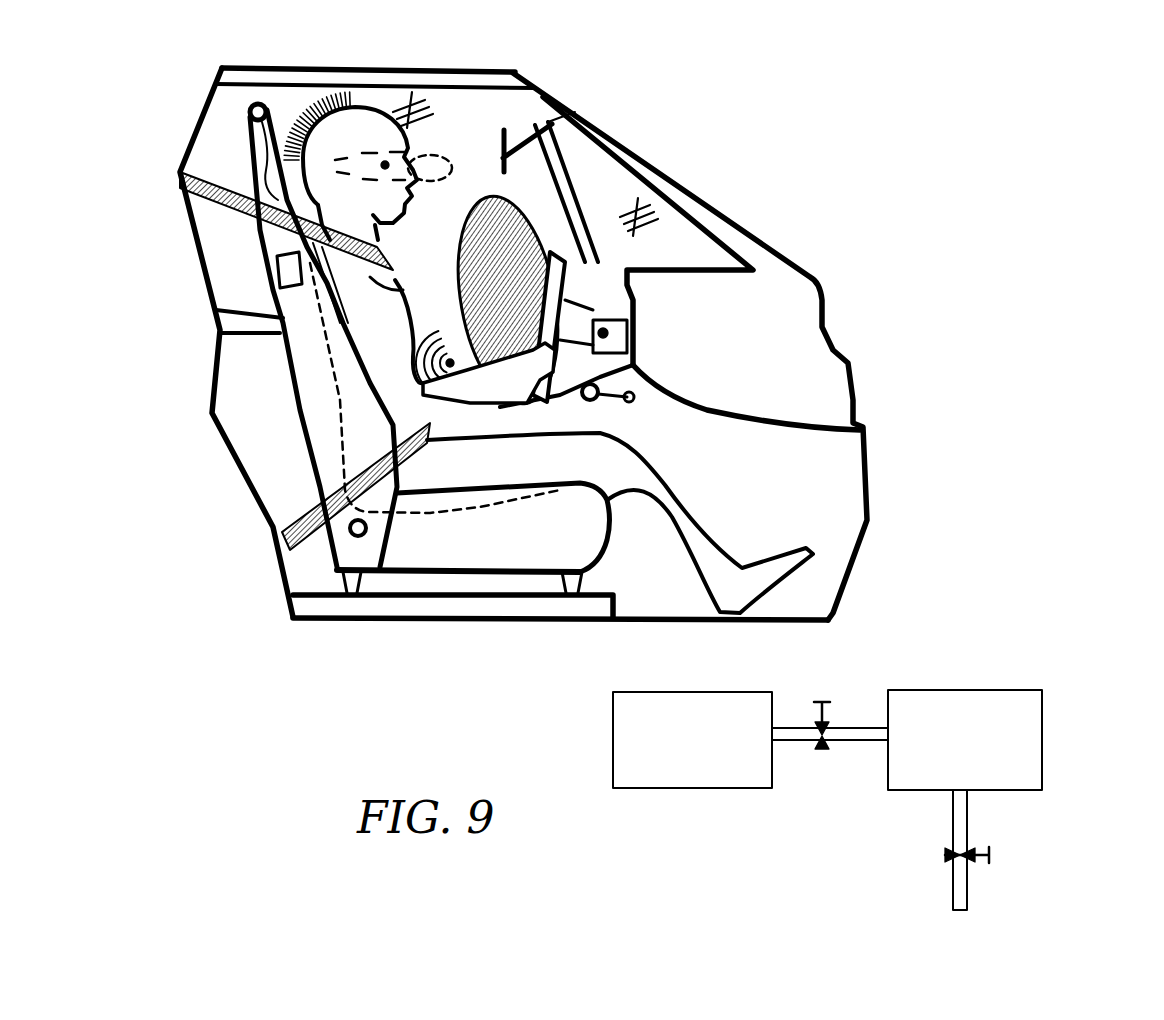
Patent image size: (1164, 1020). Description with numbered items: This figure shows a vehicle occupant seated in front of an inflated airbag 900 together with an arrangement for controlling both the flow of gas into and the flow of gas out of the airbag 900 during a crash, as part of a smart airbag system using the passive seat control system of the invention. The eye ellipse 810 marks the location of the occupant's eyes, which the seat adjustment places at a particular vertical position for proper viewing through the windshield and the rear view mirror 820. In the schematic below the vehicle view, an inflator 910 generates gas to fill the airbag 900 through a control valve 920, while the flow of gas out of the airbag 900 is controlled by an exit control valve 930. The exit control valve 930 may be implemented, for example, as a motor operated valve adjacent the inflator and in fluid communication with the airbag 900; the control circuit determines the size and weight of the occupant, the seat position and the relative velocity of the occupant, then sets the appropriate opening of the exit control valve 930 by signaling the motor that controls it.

The eye ellipse 810 is at (423, 153).
The rear view mirror 820 is at (505, 157).
The airbag 900 is at (555, 225).
The inflator 910 is at (692, 740).
The control valve 920 is at (830, 690).
The exit control valve 930 is at (1000, 853).